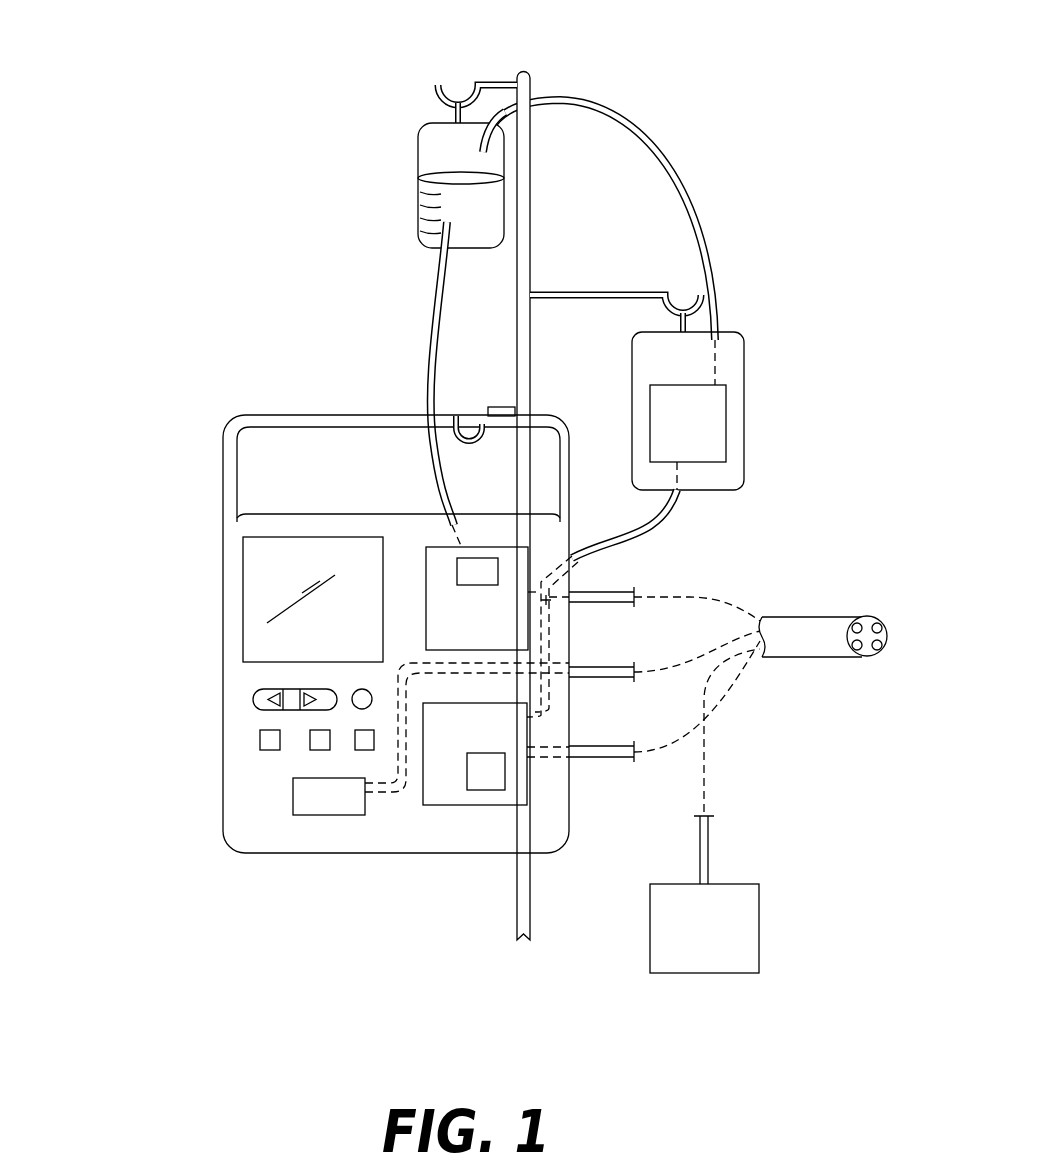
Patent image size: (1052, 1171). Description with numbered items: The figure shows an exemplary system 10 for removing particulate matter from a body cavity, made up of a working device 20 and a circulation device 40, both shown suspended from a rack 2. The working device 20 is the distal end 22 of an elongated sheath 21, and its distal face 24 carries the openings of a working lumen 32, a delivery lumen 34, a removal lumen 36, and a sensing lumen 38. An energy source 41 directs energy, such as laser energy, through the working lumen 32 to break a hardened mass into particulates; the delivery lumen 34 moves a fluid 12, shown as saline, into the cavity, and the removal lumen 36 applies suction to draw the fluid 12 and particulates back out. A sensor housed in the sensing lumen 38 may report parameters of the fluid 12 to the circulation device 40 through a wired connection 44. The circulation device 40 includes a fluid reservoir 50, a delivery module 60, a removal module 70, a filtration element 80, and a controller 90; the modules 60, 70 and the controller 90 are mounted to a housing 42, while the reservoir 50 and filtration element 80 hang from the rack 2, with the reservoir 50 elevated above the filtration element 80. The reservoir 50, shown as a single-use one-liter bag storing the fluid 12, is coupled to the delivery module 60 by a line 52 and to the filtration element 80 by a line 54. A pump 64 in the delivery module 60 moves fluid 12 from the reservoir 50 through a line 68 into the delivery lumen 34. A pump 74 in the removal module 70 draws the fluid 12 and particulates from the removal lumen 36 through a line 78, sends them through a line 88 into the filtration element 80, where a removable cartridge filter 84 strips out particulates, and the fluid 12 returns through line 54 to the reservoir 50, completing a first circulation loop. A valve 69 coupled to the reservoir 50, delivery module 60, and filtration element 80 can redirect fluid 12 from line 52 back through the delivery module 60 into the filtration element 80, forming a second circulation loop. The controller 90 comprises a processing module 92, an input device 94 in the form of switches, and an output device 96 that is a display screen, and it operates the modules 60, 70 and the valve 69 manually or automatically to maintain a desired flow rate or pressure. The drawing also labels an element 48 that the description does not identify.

The rack 2 is at (531, 82).
The system 10 is at (220, 212).
The fluid 12 is at (420, 212).
The working device 20 is at (857, 621).
The elongated sheath 21 is at (805, 657).
The distal end 22 is at (880, 654).
The distal face 24 is at (870, 617).
The working lumen 32 is at (880, 626).
The delivery lumen 34 is at (855, 625).
The removal lumen 36 is at (882, 643).
The sensing lumen 38 is at (858, 650).
The circulation device 40 is at (324, 664).
The energy source 41 is at (704, 928).
The housing 42 is at (258, 823).
The wired connection 44 is at (590, 667).
The connector 48 is at (709, 840).
The fluid reservoir 50 is at (418, 168).
The line 52 is at (430, 322).
The line 54 is at (697, 203).
The delivery module 60 is at (440, 560).
The pump 64 is at (486, 568).
The line 68 is at (604, 590).
The valve 69 is at (552, 601).
The removal module 70 is at (440, 800).
The pump 74 is at (505, 772).
The line 78 is at (588, 746).
The filtration element 80 is at (740, 466).
The filter 84 is at (713, 400).
The line 88 is at (678, 498).
The controller 90 is at (240, 710).
The processing module 92 is at (336, 800).
The input device 94 is at (260, 745).
The output device 96 is at (255, 638).